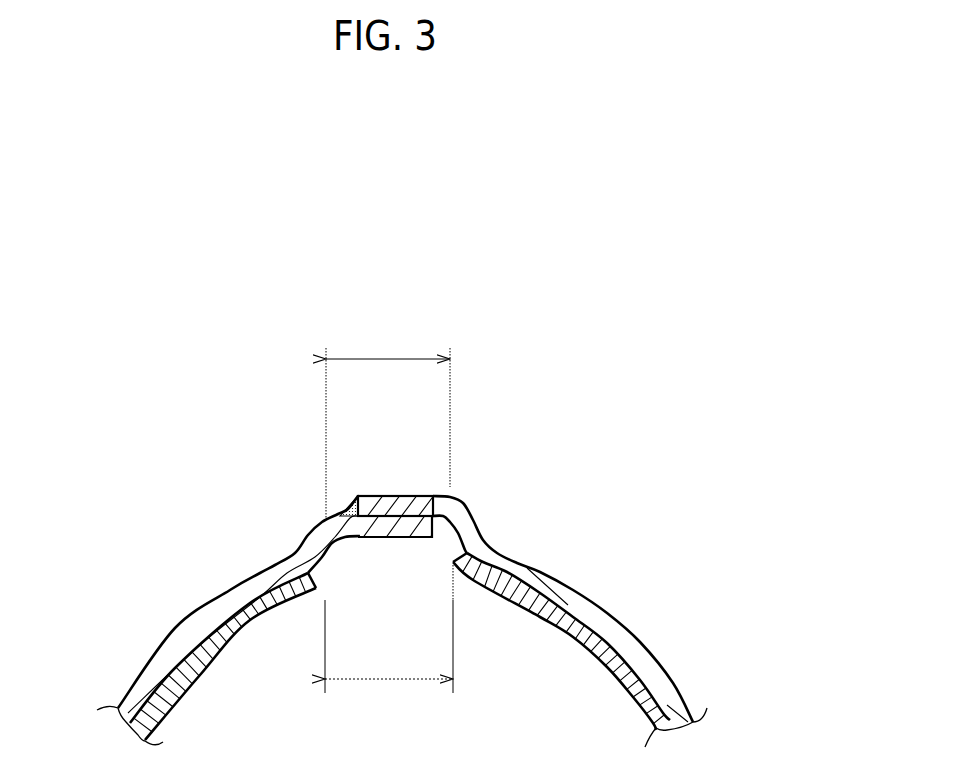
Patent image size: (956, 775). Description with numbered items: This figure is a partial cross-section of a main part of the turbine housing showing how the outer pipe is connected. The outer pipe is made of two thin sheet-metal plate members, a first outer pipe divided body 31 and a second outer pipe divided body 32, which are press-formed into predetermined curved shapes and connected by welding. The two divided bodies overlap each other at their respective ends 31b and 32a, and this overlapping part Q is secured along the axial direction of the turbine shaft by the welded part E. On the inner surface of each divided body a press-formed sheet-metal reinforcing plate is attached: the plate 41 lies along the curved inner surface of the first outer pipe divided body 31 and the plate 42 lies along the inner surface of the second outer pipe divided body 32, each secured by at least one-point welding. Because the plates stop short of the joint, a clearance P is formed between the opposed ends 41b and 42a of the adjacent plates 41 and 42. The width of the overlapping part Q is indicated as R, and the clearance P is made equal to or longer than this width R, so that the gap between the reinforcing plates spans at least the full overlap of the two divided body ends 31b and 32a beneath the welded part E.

The first outer pipe divided body 31 is at (175, 628).
The second outer pipe divided body 32 is at (633, 632).
The end of the second outer pipe divided body 32a is at (382, 497).
The end of the first outer pipe divided body 31b is at (392, 538).
The plate 41 is at (203, 672).
The end of the plate 41b is at (318, 592).
The plate 42 is at (605, 667).
The end of the plate 42a is at (463, 570).
The welded part E is at (347, 508).
The overlapping part Q is at (425, 493).
The width of the overlapping part R is at (388, 426).
The clearance P is at (389, 629).